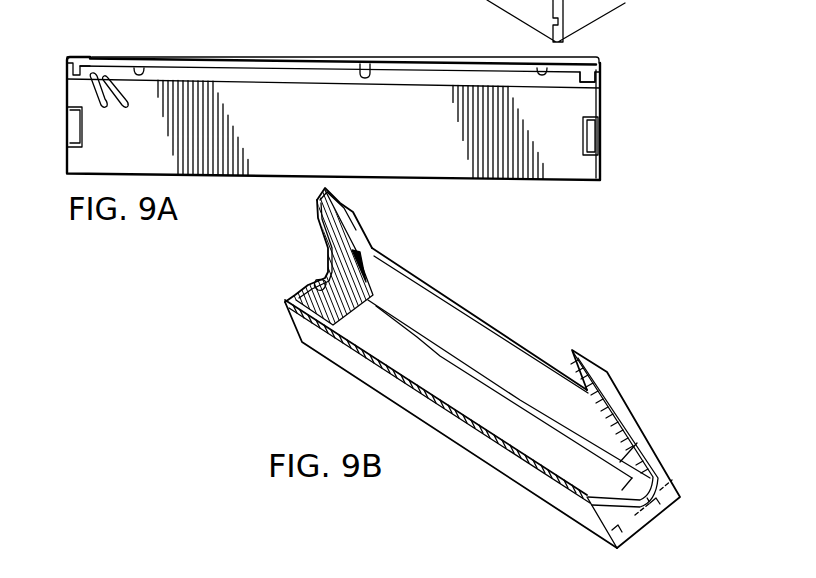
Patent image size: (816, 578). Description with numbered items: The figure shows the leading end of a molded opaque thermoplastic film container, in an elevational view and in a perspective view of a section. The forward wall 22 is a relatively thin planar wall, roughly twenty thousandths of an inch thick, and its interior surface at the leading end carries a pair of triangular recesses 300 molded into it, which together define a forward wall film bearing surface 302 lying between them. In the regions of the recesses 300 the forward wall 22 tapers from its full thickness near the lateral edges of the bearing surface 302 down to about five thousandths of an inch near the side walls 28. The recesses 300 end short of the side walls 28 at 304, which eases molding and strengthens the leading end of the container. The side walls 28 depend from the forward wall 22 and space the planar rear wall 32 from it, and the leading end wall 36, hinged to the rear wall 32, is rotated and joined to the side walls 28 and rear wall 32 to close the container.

In FIG. 9B, the forward wall 22 is at (522, 336).
In FIG. 9A, the side wall 28 is at (592, 137).
In FIG. 9B, the side wall 28 is at (332, 270).
In FIG. 9B, the rear wall 32 is at (360, 378).
In FIG. 9A, the leading end wall 36 is at (284, 168).
In FIG. 9A, the triangular recess 300 is at (136, 67).
In FIG. 9B, the triangular recess 300 is at (376, 292).
In FIG. 9A, the forward wall film bearing surface 302 is at (364, 66).
In FIG. 9A, the recess end 304 is at (69, 57).